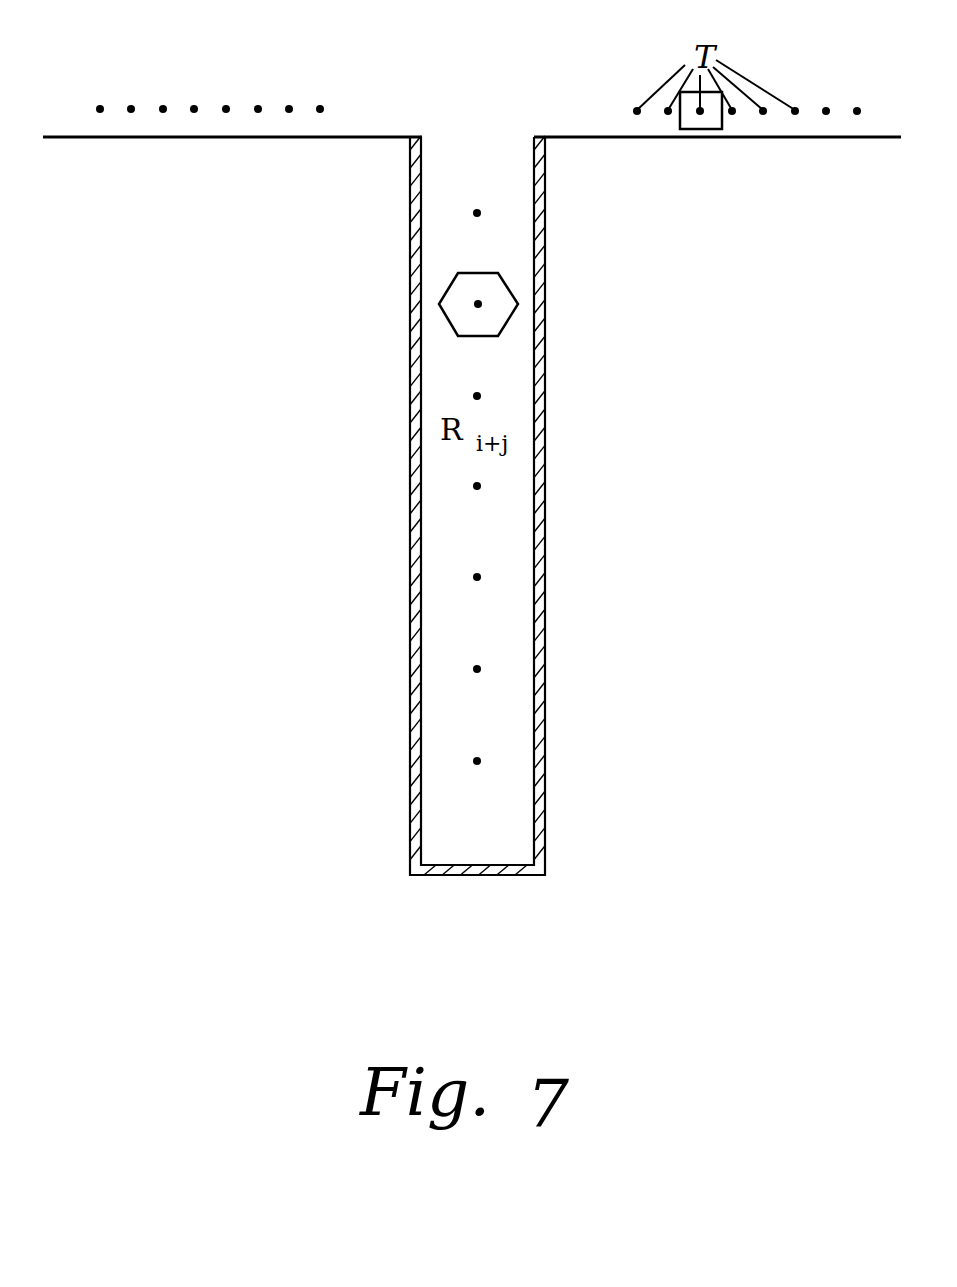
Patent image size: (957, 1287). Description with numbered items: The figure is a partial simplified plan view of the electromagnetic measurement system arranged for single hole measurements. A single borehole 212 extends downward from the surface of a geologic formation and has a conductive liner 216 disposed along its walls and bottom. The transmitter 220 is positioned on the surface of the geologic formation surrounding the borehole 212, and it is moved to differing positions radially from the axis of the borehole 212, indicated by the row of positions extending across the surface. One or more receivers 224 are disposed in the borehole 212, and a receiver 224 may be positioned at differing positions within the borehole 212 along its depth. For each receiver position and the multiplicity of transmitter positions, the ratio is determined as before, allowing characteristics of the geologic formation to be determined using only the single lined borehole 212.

The transmitter 220 is at (700, 129).
The receiver 224 is at (502, 307).
The borehole 212 is at (502, 363).
The conductive liner 216 is at (543, 432).